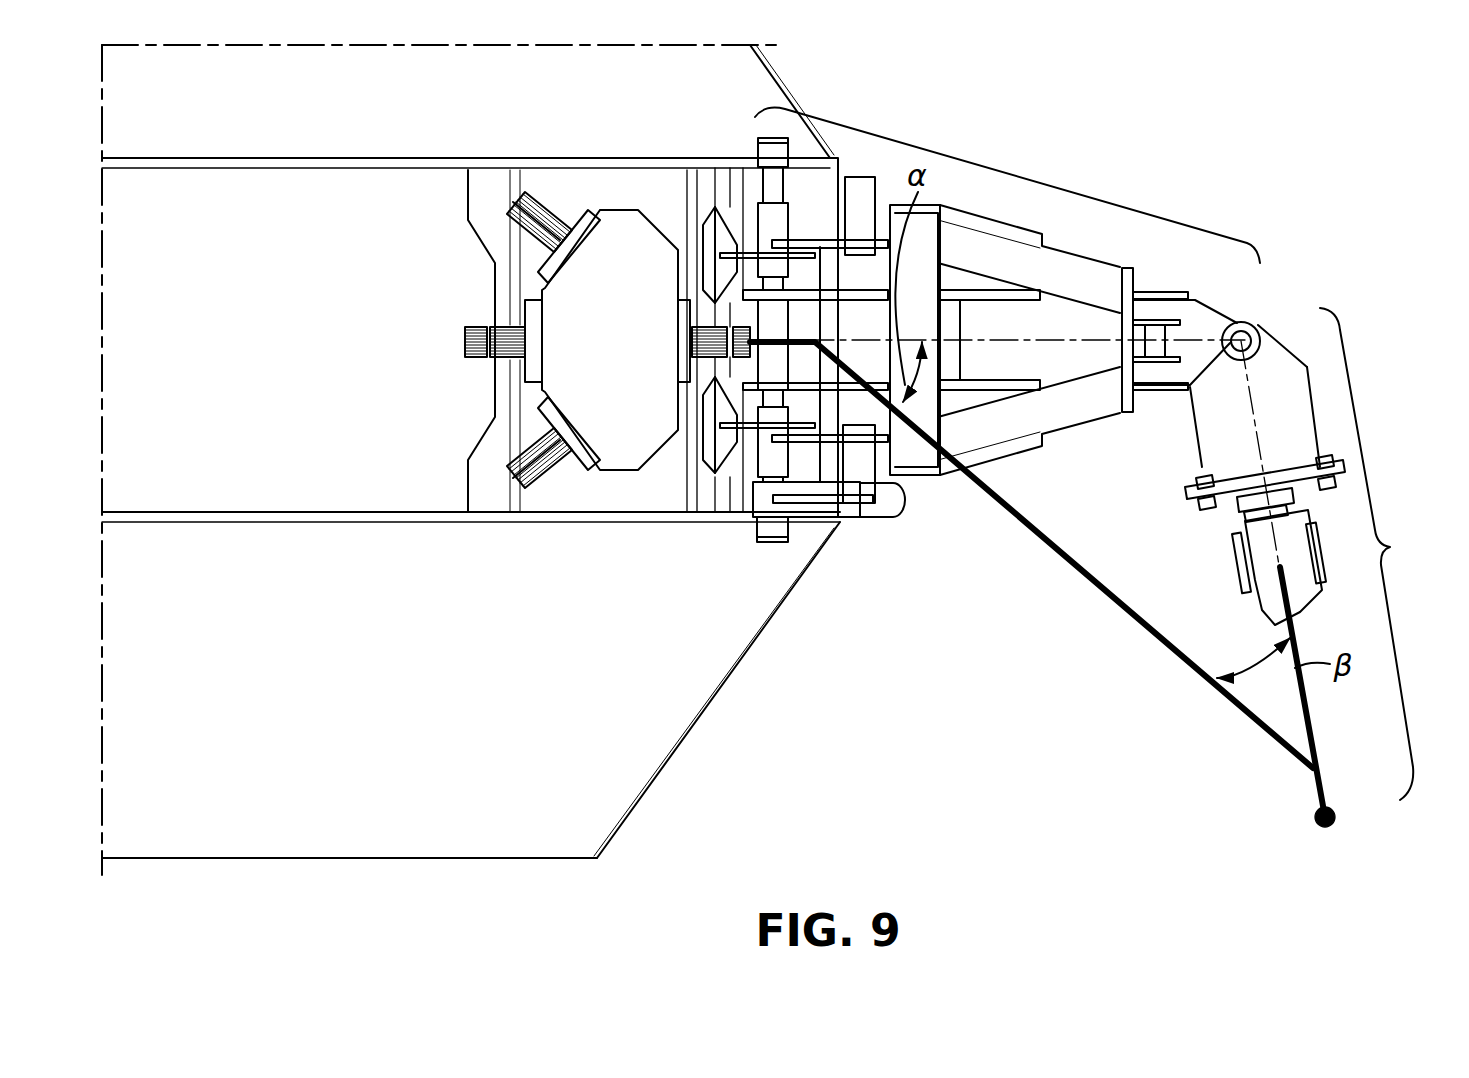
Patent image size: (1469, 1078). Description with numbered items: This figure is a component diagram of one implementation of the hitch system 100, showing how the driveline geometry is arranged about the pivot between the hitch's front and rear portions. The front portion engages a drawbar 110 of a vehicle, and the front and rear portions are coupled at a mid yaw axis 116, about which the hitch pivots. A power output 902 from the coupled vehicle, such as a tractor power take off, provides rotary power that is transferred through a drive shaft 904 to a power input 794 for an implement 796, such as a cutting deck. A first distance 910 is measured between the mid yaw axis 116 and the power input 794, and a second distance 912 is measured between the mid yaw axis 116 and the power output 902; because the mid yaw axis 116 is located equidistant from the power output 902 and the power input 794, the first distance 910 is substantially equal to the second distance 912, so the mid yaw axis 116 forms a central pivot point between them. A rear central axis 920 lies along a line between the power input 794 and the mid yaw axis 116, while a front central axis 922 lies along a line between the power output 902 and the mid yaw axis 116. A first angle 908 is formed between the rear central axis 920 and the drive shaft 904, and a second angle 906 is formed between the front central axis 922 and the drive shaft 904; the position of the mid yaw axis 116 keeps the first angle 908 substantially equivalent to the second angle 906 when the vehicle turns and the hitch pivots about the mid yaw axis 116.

The hitch system 100 is at (1323, 160).
The drawbar 110 is at (1313, 727).
The mid yaw axis 116 is at (1263, 322).
The power input 794 is at (730, 317).
The implement 796 is at (670, 722).
The power output 902 is at (1318, 827).
The drive shaft 904 is at (1076, 560).
The second angle β 906 is at (1288, 708).
The first angle α 908 is at (863, 372).
The first distance 910 is at (995, 175).
The second distance 912 is at (1335, 554).
The rear central axis 920 is at (1055, 337).
The front central axis 922 is at (1262, 425).